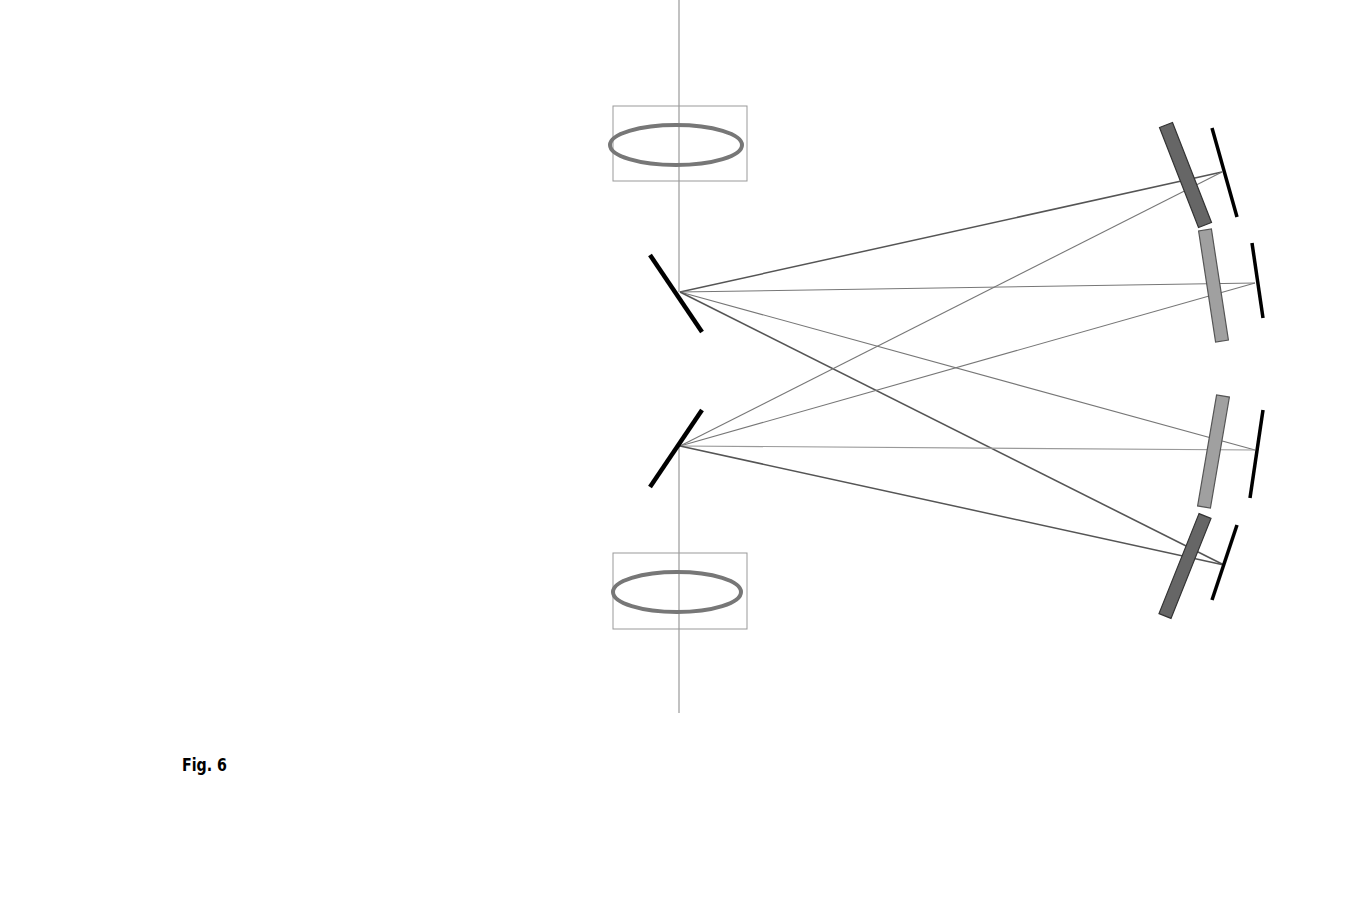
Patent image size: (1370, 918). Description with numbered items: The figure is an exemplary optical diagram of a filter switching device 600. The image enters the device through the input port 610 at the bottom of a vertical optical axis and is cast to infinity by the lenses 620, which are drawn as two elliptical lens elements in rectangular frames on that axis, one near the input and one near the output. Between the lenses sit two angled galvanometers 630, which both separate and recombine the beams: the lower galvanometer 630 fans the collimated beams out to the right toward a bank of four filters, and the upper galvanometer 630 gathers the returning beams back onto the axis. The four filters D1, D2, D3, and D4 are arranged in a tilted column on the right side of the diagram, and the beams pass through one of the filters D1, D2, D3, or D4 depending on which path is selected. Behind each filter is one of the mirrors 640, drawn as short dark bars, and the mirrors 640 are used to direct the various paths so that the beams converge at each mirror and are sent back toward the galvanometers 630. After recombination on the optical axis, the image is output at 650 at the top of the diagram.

The filter switching device 600 is at (299, 64).
The input port 610 is at (653, 581).
The lenses 620 is at (656, 367).
The galvanometers 630 is at (661, 371).
The mirrors 640 is at (1263, 364).
The output 650 is at (711, 146).
The filter D1 is at (1168, 566).
The filter D2 is at (1196, 451).
The filter D3 is at (1195, 285).
The filter D4 is at (1168, 175).